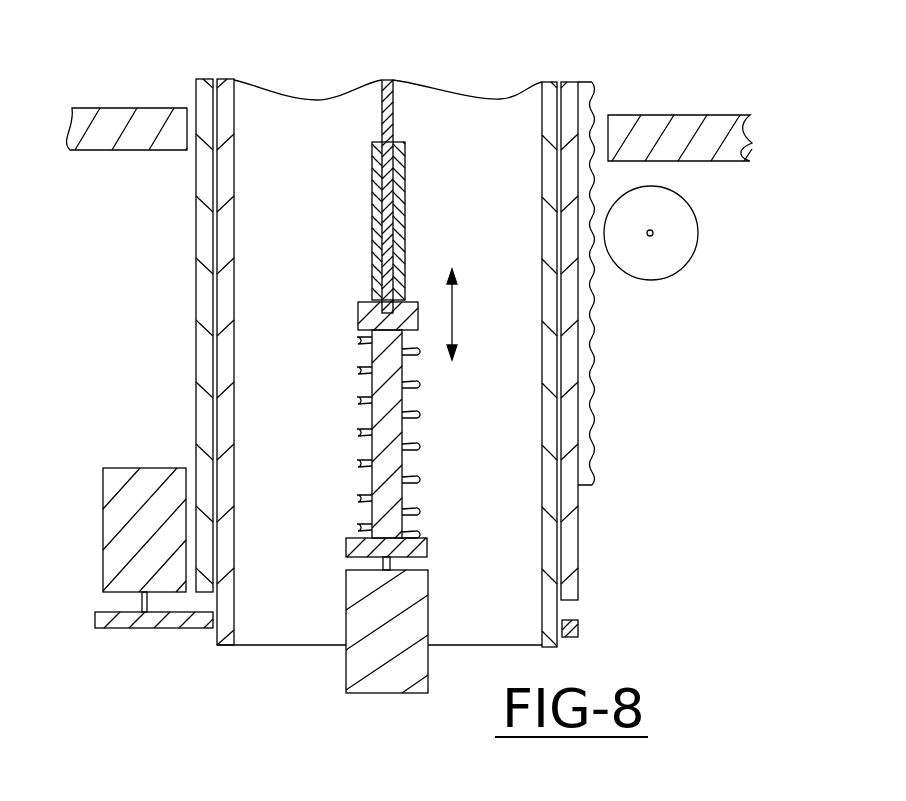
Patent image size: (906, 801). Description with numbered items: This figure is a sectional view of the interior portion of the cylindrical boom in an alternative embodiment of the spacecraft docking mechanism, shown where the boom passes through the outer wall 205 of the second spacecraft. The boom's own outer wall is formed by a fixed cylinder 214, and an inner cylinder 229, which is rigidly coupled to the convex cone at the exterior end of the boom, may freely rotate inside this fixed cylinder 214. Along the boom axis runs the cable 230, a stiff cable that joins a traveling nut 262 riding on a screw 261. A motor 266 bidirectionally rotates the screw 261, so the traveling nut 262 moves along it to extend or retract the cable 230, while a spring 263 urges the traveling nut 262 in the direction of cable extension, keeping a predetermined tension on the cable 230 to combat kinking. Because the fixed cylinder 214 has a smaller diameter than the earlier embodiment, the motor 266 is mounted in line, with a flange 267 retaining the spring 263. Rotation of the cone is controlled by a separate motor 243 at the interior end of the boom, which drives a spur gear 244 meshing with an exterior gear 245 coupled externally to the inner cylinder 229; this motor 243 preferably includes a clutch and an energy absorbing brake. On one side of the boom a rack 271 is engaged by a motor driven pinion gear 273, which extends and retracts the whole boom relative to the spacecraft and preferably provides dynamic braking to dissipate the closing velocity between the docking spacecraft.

The outer wall 205 is at (131, 108).
The fixed cylinder 214 is at (196, 270).
The inner cylinder 229 is at (234, 201).
The cable 230 is at (382, 112).
The traveling nut 262 is at (358, 305).
The screw 261 is at (372, 357).
The spring 263 is at (417, 410).
The flange 267 is at (346, 546).
The motor 266 is at (346, 590).
The motor 243 is at (135, 468).
The spur gear 244 is at (162, 628).
The exterior gear 245 is at (580, 628).
The rack 271 is at (596, 400).
The pinion gear 273 is at (665, 280).